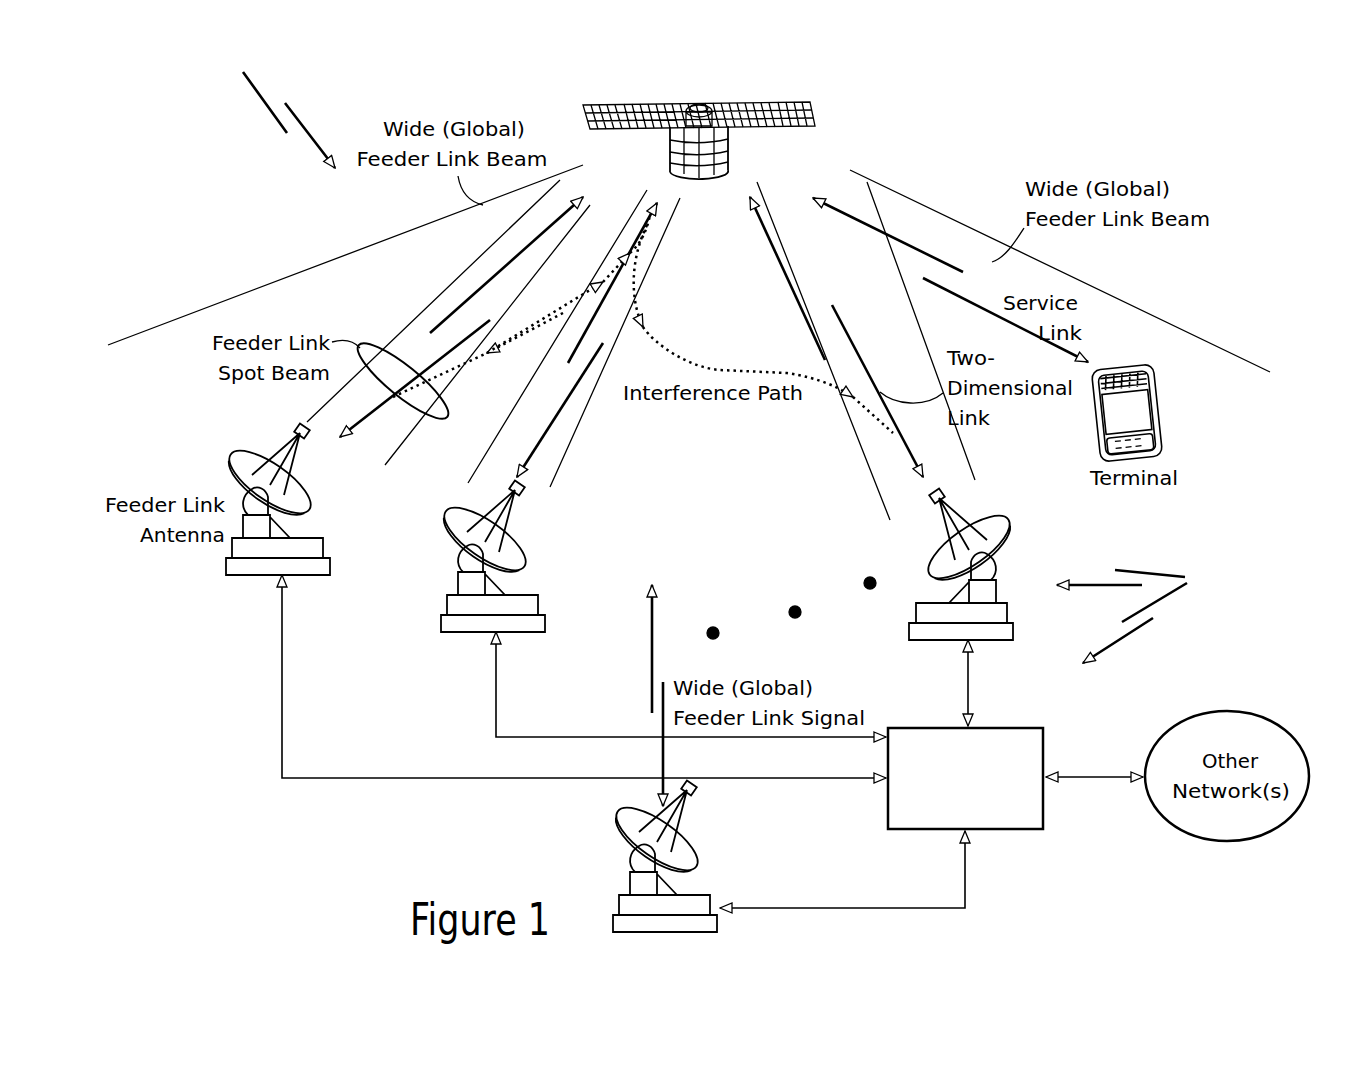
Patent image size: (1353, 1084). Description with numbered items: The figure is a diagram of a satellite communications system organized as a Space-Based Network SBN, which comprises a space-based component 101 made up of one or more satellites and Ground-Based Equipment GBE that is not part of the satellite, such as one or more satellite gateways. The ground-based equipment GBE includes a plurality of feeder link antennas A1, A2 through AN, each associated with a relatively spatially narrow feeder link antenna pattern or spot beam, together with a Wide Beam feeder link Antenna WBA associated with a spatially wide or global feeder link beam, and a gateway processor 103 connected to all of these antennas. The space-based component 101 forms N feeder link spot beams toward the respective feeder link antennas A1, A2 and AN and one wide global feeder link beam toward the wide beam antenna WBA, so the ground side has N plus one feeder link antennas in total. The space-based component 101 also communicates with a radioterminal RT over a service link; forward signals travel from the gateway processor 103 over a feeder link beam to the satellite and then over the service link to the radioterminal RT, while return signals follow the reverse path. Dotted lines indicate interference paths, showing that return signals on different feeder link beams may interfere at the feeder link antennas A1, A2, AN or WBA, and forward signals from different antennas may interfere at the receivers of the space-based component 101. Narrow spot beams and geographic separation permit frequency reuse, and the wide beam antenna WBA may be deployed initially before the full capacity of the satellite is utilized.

The space-based component 101 is at (730, 153).
The gateway processor 103 is at (1043, 812).
The feeder link antenna A1 is at (274, 516).
The feeder link antenna A2 is at (489, 575).
The feeder link antenna AN is at (964, 582).
The wide beam feeder link antenna WBA is at (681, 856).
The radioterminal RT is at (1145, 413).
The space-based network SBN is at (214, 72).
The ground-based equipment GBE is at (1225, 579).